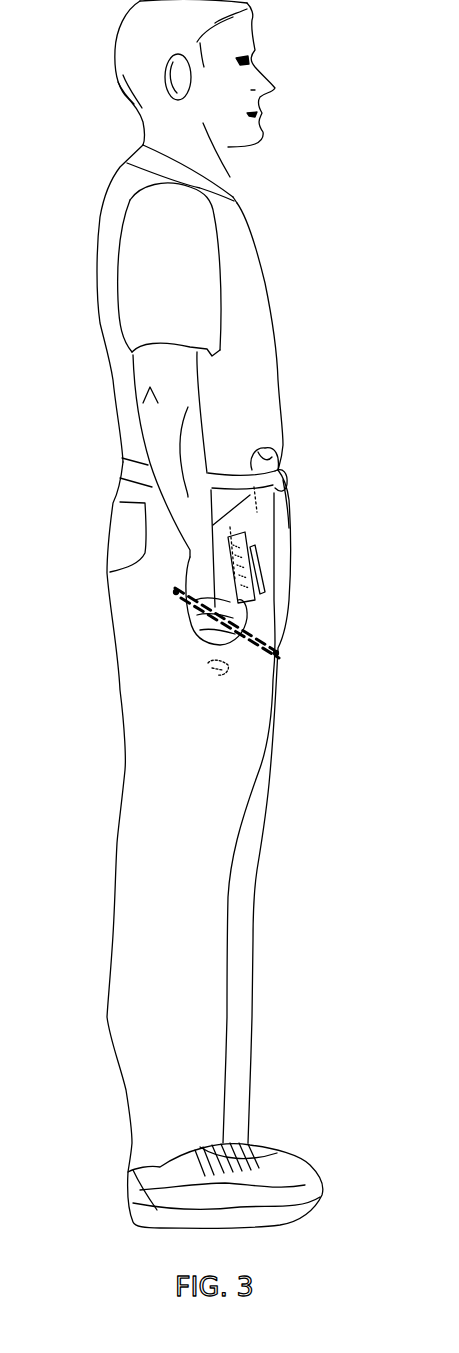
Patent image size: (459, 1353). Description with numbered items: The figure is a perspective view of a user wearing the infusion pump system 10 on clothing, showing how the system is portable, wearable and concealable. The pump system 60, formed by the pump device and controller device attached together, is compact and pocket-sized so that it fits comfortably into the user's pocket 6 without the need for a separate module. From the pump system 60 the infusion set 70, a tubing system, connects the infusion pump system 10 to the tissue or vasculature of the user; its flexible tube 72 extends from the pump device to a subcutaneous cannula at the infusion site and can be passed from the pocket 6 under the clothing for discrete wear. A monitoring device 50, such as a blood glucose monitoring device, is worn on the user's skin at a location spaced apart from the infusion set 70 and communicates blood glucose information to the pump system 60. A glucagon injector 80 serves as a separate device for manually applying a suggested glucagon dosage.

The infusion pump system 10 is at (306, 404).
The pocket 6 is at (280, 507).
The monitoring device 50 is at (232, 678).
The pump system 60 is at (267, 573).
The infusion set 70 is at (283, 441).
The flexible tube 72 is at (289, 492).
The glucagon injector 80 is at (190, 608).